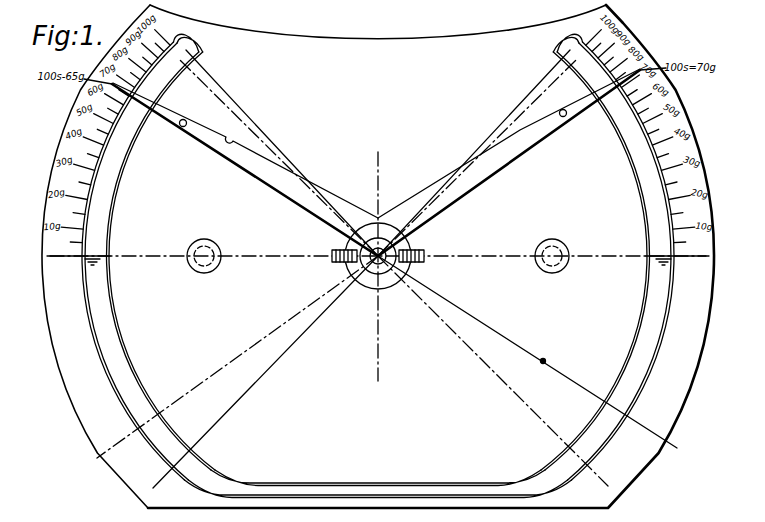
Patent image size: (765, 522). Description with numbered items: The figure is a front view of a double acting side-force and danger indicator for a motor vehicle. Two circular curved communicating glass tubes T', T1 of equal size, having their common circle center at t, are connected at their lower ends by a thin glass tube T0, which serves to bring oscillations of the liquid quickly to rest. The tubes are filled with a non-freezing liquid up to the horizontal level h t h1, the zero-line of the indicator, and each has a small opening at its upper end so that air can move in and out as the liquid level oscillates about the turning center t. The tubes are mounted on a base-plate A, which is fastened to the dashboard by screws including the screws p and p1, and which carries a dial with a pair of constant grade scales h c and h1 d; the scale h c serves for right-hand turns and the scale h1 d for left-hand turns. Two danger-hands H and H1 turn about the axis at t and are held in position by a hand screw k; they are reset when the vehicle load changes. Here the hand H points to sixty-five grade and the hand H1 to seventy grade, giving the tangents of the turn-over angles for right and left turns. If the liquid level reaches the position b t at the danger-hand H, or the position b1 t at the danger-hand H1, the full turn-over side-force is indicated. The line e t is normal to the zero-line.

The base-plate A is at (128, 461).
The zero-line end point / scale origin for right-hand-turn scale h is at (66, 257).
The zero-line end point / scale origin for left-hand-turn scale h1 is at (692, 254).
The circular curved communicating glass tube T' is at (148, 261).
The circular curved communicating glass tube T1 is at (643, 156).
The thin glass connecting tube T0 is at (355, 483).
The upper end point of right-hand-turn grade scale c is at (183, 36).
The upper end point of left-hand-turn grade scale d is at (570, 35).
The danger-hand H is at (264, 178).
The danger-hand H1 is at (474, 176).
The circle center / axis t is at (366, 274).
The hand screw k is at (340, 262).
The screw p is at (207, 259).
The screw p1 is at (553, 259).
The normal line end point e is at (386, 266).
The liquid-level position mark for right-hand turn danger b is at (571, 382).
The liquid-level position mark for left-hand turn danger b1 is at (183, 392).